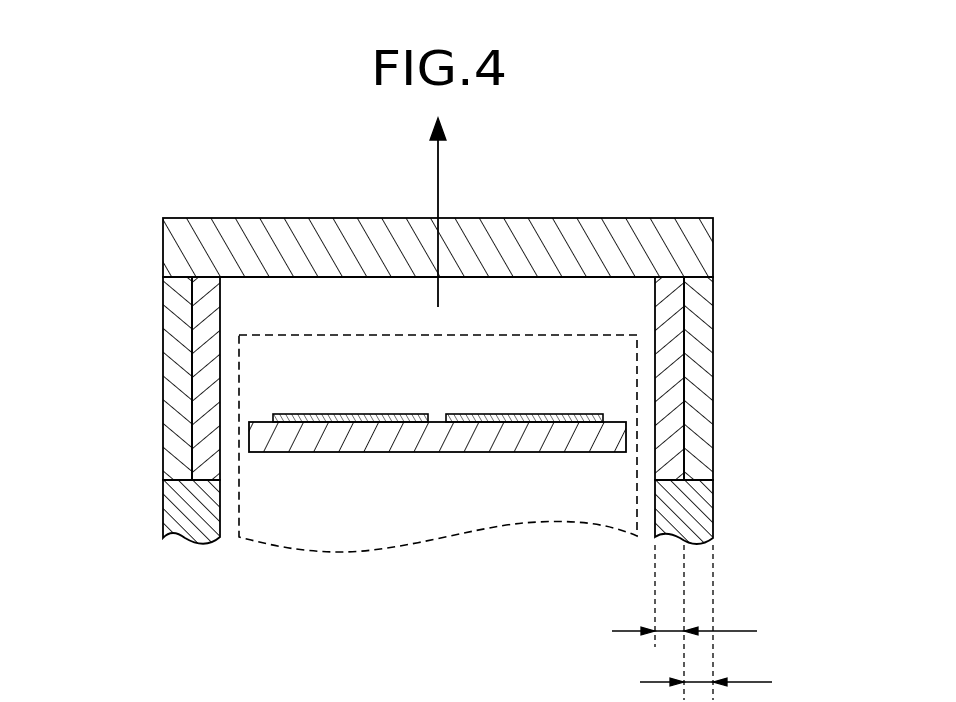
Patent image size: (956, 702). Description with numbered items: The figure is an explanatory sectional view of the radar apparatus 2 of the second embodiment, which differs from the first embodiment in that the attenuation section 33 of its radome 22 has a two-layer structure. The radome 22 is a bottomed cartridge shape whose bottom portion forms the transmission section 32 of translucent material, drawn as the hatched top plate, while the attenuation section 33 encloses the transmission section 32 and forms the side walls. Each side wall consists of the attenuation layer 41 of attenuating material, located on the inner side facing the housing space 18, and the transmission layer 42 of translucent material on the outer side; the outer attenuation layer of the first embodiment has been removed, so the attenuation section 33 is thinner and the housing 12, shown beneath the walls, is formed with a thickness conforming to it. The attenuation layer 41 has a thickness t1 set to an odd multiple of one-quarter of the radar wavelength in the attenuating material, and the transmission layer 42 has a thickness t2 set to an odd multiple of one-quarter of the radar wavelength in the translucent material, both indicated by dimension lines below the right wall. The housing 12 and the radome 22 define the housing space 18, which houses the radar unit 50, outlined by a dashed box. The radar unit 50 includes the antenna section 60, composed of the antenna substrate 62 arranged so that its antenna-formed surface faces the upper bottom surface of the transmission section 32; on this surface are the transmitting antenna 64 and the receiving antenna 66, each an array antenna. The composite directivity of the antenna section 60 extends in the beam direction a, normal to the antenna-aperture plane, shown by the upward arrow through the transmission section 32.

The radar apparatus 2 is at (95, 155).
The radome 22 is at (129, 216).
The transmission section 32 is at (250, 218).
The attenuation section 33 is at (823, 293).
The attenuation layer 41 is at (665, 352).
The transmission layer 42 is at (695, 377).
The housing space 18 is at (575, 278).
The housing 12 is at (130, 506).
The radar unit 50 is at (333, 335).
The antenna section 60 is at (352, 388).
The antenna substrate 62 is at (520, 452).
The transmitting antenna 64 is at (371, 414).
The receiving antenna 66 is at (508, 414).
The beam direction a is at (438, 193).
The thickness of attenuation layer t1 is at (670, 631).
The thickness of transmission layer t2 is at (698, 682).